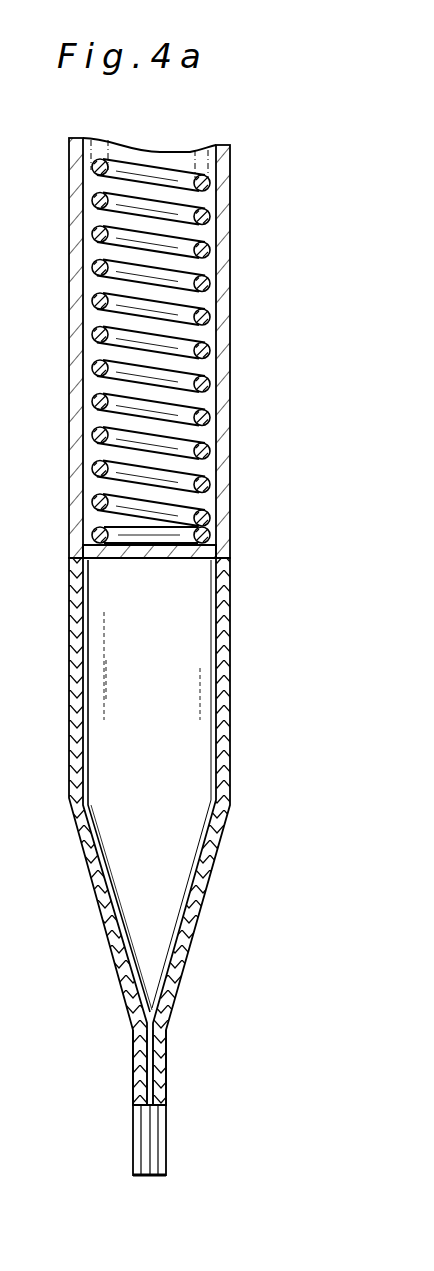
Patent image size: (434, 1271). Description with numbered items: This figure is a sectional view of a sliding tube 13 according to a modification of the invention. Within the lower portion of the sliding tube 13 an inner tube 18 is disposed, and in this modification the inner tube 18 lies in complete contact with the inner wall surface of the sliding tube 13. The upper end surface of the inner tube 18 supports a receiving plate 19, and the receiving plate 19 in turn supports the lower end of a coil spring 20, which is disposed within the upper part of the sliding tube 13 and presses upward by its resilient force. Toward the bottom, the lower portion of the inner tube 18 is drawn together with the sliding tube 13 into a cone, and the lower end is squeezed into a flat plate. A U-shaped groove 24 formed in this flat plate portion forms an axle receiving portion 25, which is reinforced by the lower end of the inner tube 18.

The sliding tube 13 is at (229, 628).
The inner tube 18 is at (213, 693).
The receiving plate 19 is at (155, 560).
The coil spring 20 is at (203, 405).
The U-shaped groove 24 is at (160, 1145).
The axle receiving portion 25 is at (166, 1078).